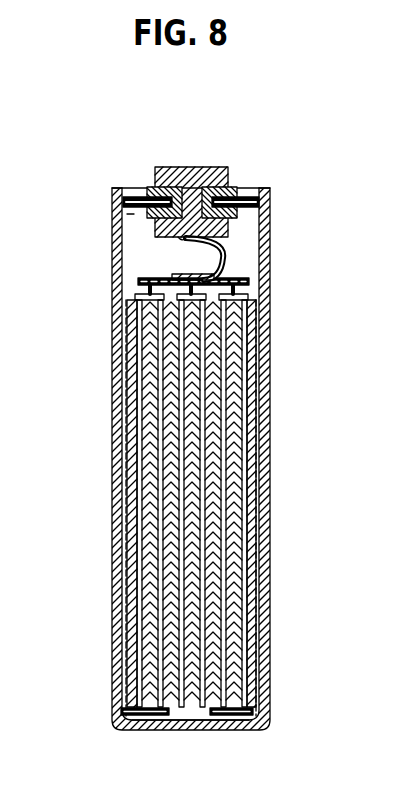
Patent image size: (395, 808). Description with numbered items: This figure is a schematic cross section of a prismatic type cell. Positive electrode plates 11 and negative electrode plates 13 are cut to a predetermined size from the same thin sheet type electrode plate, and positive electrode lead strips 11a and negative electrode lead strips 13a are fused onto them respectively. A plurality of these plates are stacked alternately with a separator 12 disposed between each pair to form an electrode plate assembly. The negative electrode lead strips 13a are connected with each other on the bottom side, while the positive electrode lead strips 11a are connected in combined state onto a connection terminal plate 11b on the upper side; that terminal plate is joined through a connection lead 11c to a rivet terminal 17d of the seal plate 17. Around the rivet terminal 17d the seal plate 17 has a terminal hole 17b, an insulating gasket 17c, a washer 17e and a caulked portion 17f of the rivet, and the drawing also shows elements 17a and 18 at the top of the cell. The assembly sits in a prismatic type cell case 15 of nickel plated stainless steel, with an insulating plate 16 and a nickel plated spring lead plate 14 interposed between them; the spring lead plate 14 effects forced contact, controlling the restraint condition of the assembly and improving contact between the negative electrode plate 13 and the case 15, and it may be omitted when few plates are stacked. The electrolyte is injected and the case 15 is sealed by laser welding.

The positive electrode plate 11 is at (232, 420).
The positive electrode lead strip 11a is at (242, 290).
The connection terminal plate 11b is at (242, 279).
The connection lead 11c is at (226, 250).
The separator 12 is at (250, 468).
The negative electrode plate 13 is at (253, 515).
The negative electrode lead strip 13a is at (146, 718).
The spring lead plate 14 is at (125, 505).
The prismatic type cell case 15 is at (117, 386).
The insulating plate 16 is at (195, 724).
The seal plate 17 is at (194, 166).
The right terminal washer arm 17a is at (250, 197).
The terminal hole 17b is at (221, 187).
The insulating gasket 17c is at (134, 197).
The rivet terminal 17d is at (160, 187).
The washer 17e is at (134, 222).
The caulked portion of a rivet 17f is at (184, 239).
The case lid 18 is at (114, 189).